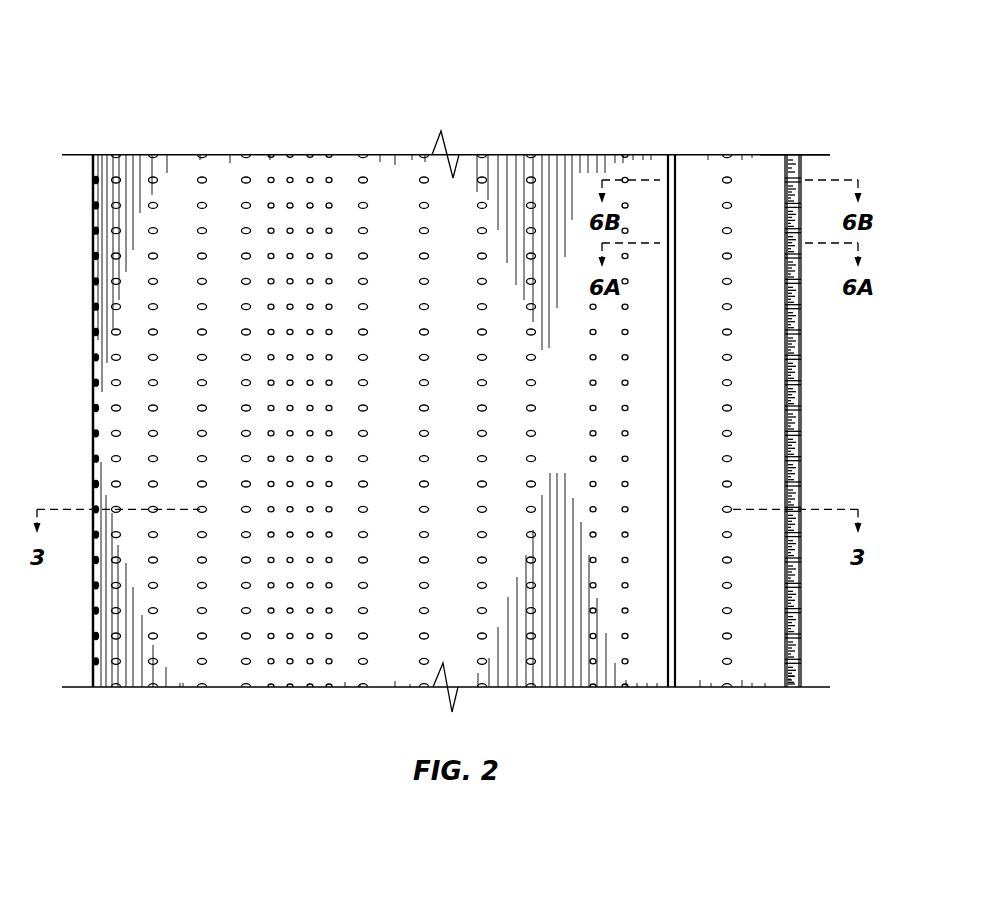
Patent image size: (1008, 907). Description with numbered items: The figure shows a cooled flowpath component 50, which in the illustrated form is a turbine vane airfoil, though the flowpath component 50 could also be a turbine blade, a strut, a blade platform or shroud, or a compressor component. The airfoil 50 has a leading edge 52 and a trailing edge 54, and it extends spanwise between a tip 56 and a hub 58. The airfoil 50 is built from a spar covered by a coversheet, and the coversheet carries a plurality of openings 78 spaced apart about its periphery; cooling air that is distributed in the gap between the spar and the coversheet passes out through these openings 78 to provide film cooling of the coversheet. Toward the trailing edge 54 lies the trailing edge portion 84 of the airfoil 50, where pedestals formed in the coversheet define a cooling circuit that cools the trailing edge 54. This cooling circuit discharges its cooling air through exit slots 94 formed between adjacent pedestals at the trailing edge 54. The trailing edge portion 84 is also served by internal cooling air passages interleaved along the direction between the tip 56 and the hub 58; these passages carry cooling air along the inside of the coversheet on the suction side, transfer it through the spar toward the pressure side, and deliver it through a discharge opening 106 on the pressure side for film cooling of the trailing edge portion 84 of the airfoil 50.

The flowpath component 50 is at (123, 69).
The leading edge 52 is at (93, 420).
The trailing edge 54 is at (801, 447).
The tip 56 is at (257, 154).
The hub 58 is at (257, 688).
The openings 78 is at (313, 281).
The trailing edge portion 84 is at (804, 141).
The exit slots 94 is at (801, 358).
The discharge opening 106 is at (733, 408).